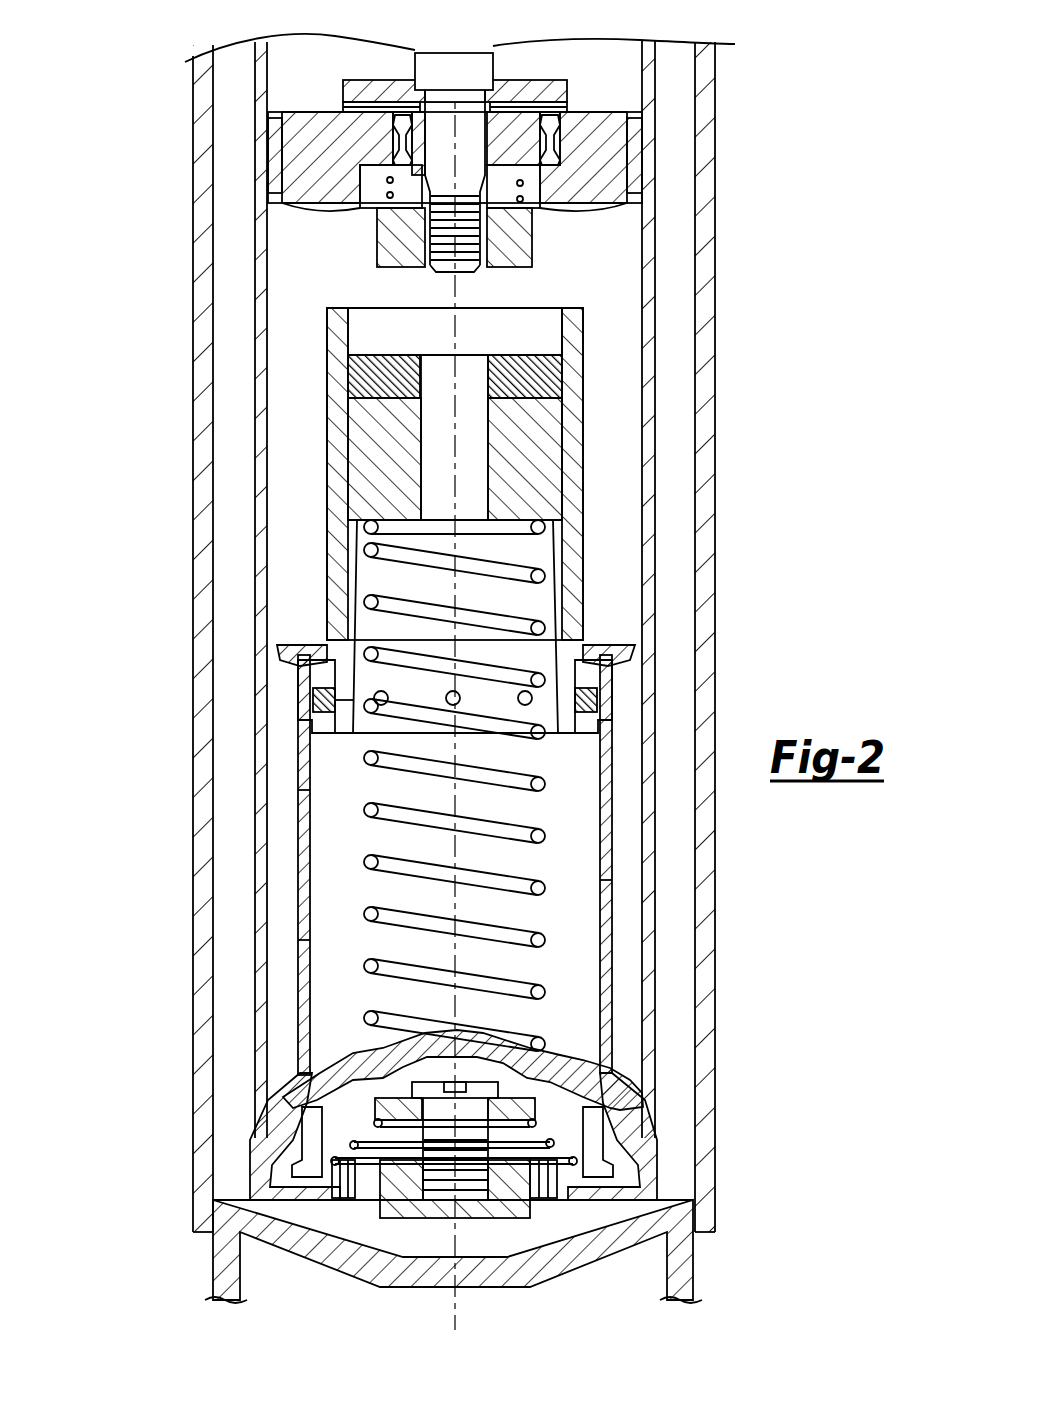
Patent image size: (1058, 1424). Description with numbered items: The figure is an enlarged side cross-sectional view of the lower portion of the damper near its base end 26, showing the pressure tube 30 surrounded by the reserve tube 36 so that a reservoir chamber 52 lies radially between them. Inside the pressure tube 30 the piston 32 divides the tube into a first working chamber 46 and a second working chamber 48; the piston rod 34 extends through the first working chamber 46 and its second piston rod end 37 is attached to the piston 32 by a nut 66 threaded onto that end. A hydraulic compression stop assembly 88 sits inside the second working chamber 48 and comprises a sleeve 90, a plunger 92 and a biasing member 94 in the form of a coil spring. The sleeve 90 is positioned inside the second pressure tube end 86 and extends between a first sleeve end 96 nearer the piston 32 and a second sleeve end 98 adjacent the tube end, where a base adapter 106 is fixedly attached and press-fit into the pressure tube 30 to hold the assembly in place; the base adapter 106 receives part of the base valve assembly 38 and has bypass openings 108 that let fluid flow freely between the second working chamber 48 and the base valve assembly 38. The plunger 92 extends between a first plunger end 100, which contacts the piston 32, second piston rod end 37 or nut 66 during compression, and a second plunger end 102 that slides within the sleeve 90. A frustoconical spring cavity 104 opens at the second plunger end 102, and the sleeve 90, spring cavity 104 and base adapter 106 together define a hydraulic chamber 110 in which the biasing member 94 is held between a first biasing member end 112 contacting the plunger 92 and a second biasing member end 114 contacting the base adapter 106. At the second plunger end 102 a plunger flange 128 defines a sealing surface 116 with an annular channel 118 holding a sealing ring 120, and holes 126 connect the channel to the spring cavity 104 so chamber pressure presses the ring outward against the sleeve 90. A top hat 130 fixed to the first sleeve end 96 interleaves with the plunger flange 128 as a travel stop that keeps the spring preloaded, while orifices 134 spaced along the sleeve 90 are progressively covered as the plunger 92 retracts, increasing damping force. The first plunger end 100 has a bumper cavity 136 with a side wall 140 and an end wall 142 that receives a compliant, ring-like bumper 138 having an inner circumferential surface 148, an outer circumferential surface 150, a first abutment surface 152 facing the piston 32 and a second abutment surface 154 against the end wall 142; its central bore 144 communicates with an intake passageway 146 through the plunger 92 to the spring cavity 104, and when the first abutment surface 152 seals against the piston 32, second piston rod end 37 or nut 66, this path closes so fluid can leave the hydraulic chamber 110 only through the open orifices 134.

The base end 26 is at (164, 1263).
The pressure tube 30 is at (263, 748).
The piston 32 is at (600, 104).
The piston rod 34 is at (437, 70).
The reserve tube 36 is at (203, 318).
The second piston rod end 37 is at (480, 236).
The base valve assembly 38 is at (367, 1220).
The first working chamber 46 is at (294, 90).
The second working chamber 48 is at (289, 502).
The reservoir chamber 52 is at (684, 432).
The nut 66 is at (395, 228).
The second pressure tube end 86 is at (660, 1133).
The hydraulic compression stop assembly 88 is at (604, 622).
The sleeve 90 is at (613, 913).
The plunger 92 is at (540, 432).
The biasing member 94 is at (546, 832).
The first sleeve end 96 is at (612, 678).
The second sleeve end 98 is at (618, 1076).
The first plunger end 100 is at (590, 326).
The second plunger end 102 is at (331, 752).
The spring cavity 104 is at (396, 598).
The base adapter 106 is at (294, 1107).
The bypass openings 108 is at (334, 1140).
The hydraulic chamber 110 is at (615, 885).
The first biasing member end 112 is at (368, 527).
The second biasing member end 114 is at (546, 1050).
The sealing surface 116 is at (300, 688).
The annular channel 118 is at (332, 690).
The sealing ring 120 is at (598, 700).
The holes 126 is at (522, 692).
The plunger flange 128 is at (622, 636).
The top hat 130 is at (300, 652).
The orifices 134 is at (300, 883).
The bumper cavity 136 is at (550, 338).
The bumper 138 is at (355, 388).
The side wall 140 is at (355, 338).
The end wall 142 is at (495, 384).
The central bore 144 is at (440, 398).
The intake passageway 146 is at (526, 508).
The inner circumferential surface 148 is at (479, 384).
The outer circumferential surface 150 is at (565, 378).
The first abutment surface 152 is at (382, 350).
The second abutment surface 154 is at (395, 400).